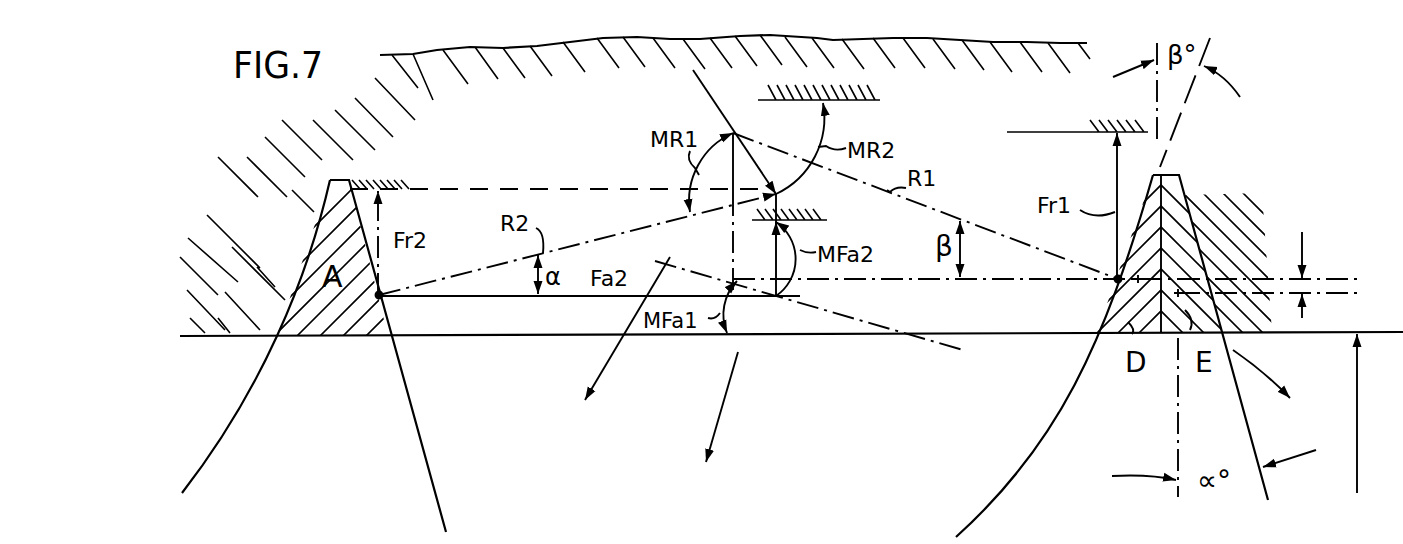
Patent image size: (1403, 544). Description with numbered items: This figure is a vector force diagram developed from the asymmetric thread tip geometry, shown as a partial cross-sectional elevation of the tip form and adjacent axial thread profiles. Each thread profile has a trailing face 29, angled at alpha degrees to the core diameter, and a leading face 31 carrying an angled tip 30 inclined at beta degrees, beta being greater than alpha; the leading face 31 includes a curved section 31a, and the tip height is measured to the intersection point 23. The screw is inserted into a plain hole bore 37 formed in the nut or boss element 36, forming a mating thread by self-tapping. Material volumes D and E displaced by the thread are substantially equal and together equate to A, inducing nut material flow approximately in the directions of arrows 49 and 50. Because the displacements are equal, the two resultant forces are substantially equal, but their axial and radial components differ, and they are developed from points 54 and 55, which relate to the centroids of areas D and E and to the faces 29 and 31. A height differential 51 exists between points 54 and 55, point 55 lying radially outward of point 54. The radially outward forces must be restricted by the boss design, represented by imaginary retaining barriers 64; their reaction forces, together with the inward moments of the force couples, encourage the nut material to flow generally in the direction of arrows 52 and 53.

The intersection point 23 is at (1125, 331).
The trailing face 29 is at (362, 178).
The tip 30 is at (313, 226).
The leading face 31 is at (1035, 418).
The curved section 31a is at (1020, 467).
The boss element 36 is at (650, 112).
The plain hole bore 37 is at (1359, 418).
The arrow 49 is at (1026, 378).
The arrow 50 is at (1258, 363).
The height differential 51 is at (1378, 280).
The arrow 52 is at (607, 370).
The arrow 53 is at (728, 398).
The point 54 is at (383, 298).
The point 55 is at (1112, 281).
The imaginary retaining barriers 64 is at (403, 186).